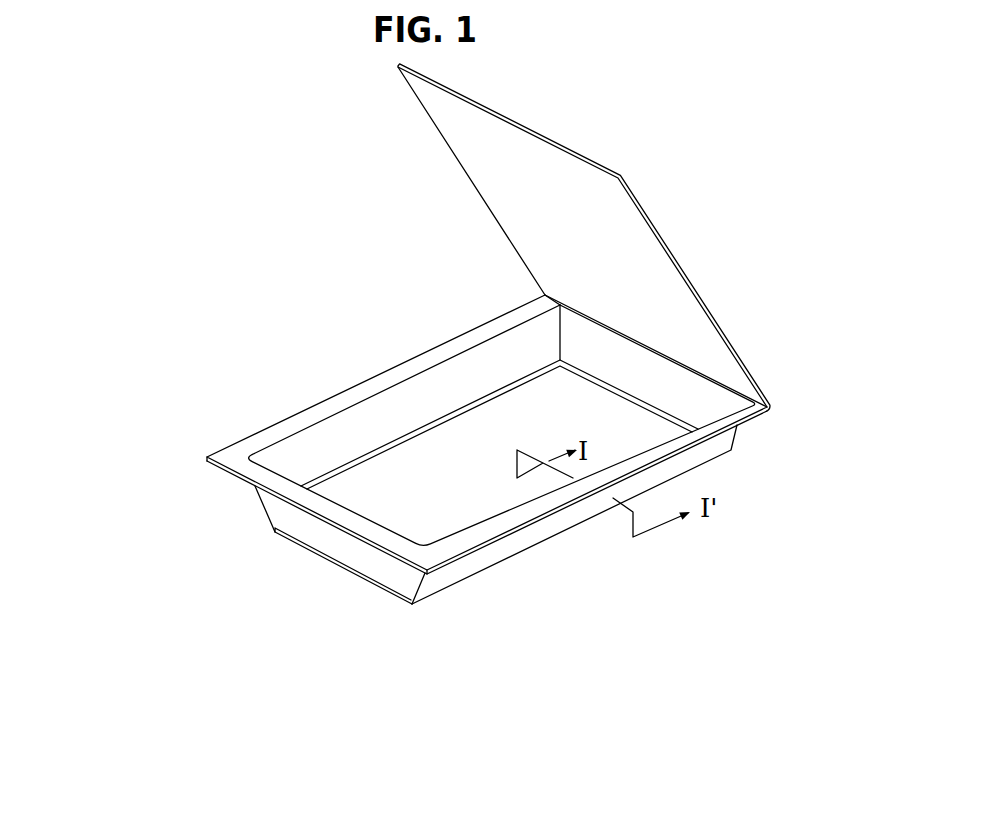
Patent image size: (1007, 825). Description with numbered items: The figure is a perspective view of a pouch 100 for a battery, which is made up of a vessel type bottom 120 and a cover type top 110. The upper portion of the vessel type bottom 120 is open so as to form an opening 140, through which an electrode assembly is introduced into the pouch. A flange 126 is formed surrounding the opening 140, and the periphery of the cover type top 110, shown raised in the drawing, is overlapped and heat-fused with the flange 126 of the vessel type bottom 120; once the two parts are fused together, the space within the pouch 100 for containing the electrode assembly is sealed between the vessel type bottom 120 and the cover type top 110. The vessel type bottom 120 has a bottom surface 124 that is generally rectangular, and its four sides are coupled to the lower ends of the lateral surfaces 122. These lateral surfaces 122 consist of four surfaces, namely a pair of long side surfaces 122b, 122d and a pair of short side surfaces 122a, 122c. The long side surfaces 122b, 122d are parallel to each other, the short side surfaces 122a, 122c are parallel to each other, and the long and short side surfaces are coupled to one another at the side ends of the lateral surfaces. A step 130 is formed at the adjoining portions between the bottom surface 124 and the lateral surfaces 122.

The pouch 100 is at (285, 234).
The cover type top 110 is at (452, 130).
The vessel type bottom 120 is at (92, 411).
The lateral surfaces 122 is at (313, 537).
The short side surface 122a is at (397, 572).
The long side surface 122b is at (542, 527).
The short side surface 122c is at (676, 382).
The long side surface 122d is at (500, 362).
The bottom surface 124 is at (347, 495).
The flange 126 is at (253, 442).
The step 130 is at (453, 412).
The opening 140 is at (333, 410).